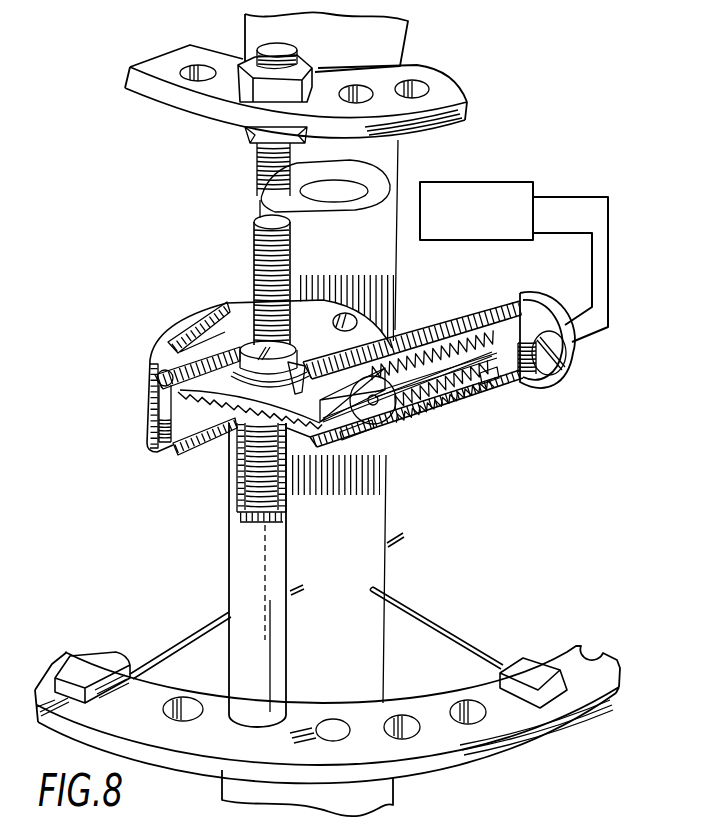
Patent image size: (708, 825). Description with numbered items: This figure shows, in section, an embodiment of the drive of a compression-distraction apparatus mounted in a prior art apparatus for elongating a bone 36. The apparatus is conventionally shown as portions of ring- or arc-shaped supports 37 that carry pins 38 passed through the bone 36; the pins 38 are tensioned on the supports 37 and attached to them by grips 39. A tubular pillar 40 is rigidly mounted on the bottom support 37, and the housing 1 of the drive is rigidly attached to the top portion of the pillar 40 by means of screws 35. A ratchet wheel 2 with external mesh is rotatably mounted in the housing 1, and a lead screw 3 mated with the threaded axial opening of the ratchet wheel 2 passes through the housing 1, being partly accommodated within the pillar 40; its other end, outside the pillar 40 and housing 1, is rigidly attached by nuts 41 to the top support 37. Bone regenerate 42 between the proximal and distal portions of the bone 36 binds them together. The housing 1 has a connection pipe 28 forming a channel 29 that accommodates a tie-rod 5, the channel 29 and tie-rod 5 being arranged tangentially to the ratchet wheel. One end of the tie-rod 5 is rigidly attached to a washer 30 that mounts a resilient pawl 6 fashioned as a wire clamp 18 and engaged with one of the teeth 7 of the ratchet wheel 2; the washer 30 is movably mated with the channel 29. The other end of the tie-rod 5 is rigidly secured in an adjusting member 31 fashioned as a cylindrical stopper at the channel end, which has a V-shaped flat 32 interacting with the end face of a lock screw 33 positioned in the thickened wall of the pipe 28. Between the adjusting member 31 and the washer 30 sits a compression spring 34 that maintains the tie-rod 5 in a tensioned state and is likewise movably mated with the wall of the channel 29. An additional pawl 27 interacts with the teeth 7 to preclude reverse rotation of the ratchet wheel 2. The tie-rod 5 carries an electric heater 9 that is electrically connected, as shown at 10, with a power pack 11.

The housing 1 is at (335, 361).
The ratchet wheel 2 is at (241, 472).
The lead screw 3 is at (250, 280).
The tie-rod 5 is at (436, 402).
The pawl 6 is at (373, 446).
The teeth 7 is at (250, 433).
The electric heater 9 is at (499, 401).
The electrical connection 10 is at (570, 248).
The power pack 11 is at (476, 192).
The wire clamp 18 is at (309, 358).
The additional pawl 27 is at (190, 323).
The connection pipe 28 is at (436, 318).
The channel 29 is at (381, 419).
The washer 30 is at (412, 419).
The adjusting member 31 is at (463, 333).
The V-shaped flat 32 is at (547, 322).
The lock screw 33 is at (566, 353).
The compression spring 34 is at (408, 340).
The screws 35 is at (138, 406).
The bone 36 is at (339, 414).
The supports 37 is at (327, 414).
The pins 38 is at (316, 606).
The grips 39 is at (311, 656).
The tubular pillar 40 is at (237, 575).
The nuts 41 is at (253, 119).
The bone regenerate 42 is at (363, 366).